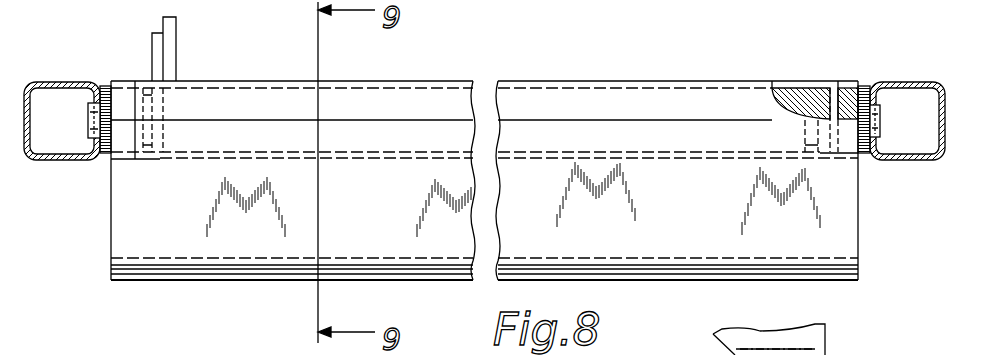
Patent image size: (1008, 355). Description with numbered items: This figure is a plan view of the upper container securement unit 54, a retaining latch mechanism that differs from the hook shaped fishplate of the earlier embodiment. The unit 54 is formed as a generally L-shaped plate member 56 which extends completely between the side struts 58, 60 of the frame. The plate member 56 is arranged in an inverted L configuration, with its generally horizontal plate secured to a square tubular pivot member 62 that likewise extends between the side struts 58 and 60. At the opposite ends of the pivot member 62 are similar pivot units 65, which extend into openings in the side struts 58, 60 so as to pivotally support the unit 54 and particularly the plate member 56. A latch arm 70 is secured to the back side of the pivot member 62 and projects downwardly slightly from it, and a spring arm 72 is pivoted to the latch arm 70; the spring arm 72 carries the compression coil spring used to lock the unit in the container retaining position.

The upper container securement unit 54 is at (104, 83).
The L-shaped plate member 56 is at (115, 218).
The side strut 58 is at (45, 81).
The side strut 60 is at (910, 82).
The square tubular pivot member 62 is at (780, 82).
The pivot unit 65 is at (105, 159).
The latch arm 70 is at (152, 57).
The spring arm 72 is at (176, 48).